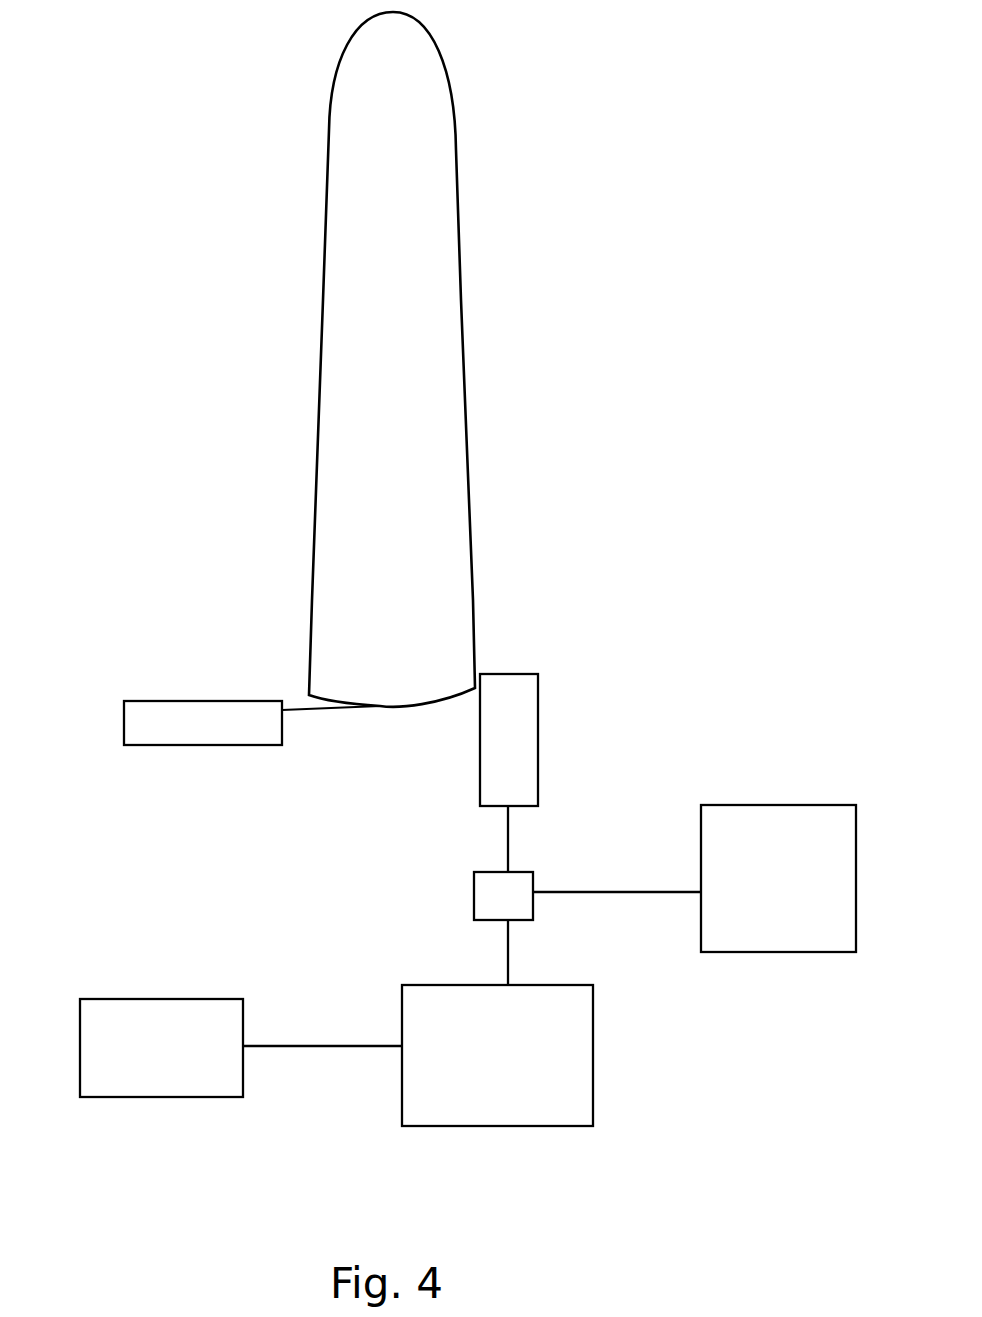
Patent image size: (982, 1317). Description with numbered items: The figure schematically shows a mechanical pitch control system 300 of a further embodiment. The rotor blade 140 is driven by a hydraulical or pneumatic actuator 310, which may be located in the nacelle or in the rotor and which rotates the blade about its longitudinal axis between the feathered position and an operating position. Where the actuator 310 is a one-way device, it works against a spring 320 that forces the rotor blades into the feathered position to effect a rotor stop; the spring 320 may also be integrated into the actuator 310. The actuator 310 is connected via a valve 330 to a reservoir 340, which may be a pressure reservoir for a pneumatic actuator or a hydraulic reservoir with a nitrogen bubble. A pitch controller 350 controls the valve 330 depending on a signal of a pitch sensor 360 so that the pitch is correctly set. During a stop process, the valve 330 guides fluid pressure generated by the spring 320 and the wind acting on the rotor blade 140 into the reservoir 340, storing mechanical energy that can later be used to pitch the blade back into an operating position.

The pitch control system 300 is at (176, 327).
The rotor blade 140 is at (422, 170).
The hydraulical or pneumatic actuator 310 is at (523, 712).
The spring 320 is at (218, 736).
The valve 330 is at (482, 898).
The reservoir 340 is at (778, 896).
The pitch controller 350 is at (514, 1053).
The pitch sensor 360 is at (162, 1059).